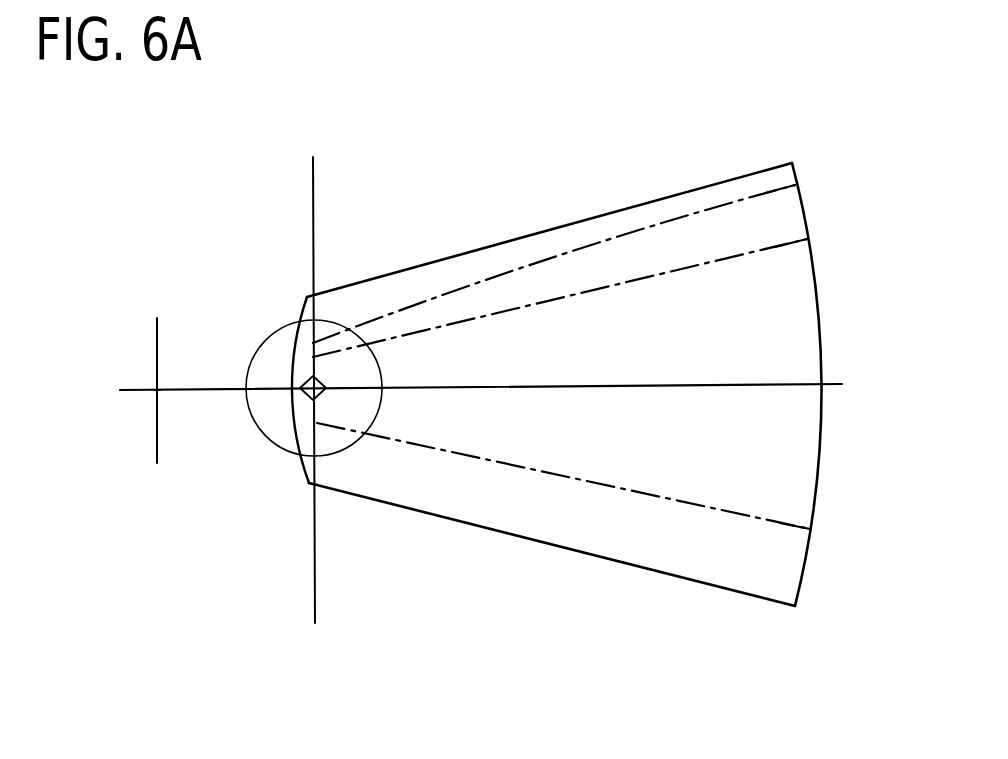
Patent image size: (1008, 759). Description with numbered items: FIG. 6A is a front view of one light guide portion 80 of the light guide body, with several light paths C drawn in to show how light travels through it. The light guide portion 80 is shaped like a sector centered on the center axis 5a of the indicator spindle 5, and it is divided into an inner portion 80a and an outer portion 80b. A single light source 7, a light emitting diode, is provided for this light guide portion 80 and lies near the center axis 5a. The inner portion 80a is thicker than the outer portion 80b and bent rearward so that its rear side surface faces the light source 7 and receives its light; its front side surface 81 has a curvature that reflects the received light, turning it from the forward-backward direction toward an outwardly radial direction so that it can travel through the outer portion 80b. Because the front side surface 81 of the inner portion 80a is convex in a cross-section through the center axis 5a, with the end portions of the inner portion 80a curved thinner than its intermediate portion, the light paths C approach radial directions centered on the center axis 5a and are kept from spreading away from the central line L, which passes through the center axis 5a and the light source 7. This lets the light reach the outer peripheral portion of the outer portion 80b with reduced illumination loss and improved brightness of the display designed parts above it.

The indicator spindle 5 is at (146, 377).
The center axis 5a is at (153, 392).
The light source 7 is at (327, 377).
The light guide portion 80 is at (522, 374).
The inner portion 80a is at (287, 352).
The outer portion 80b is at (564, 222).
The front side surface 81 is at (425, 287).
The light path C is at (608, 237).
The central line L is at (505, 427).